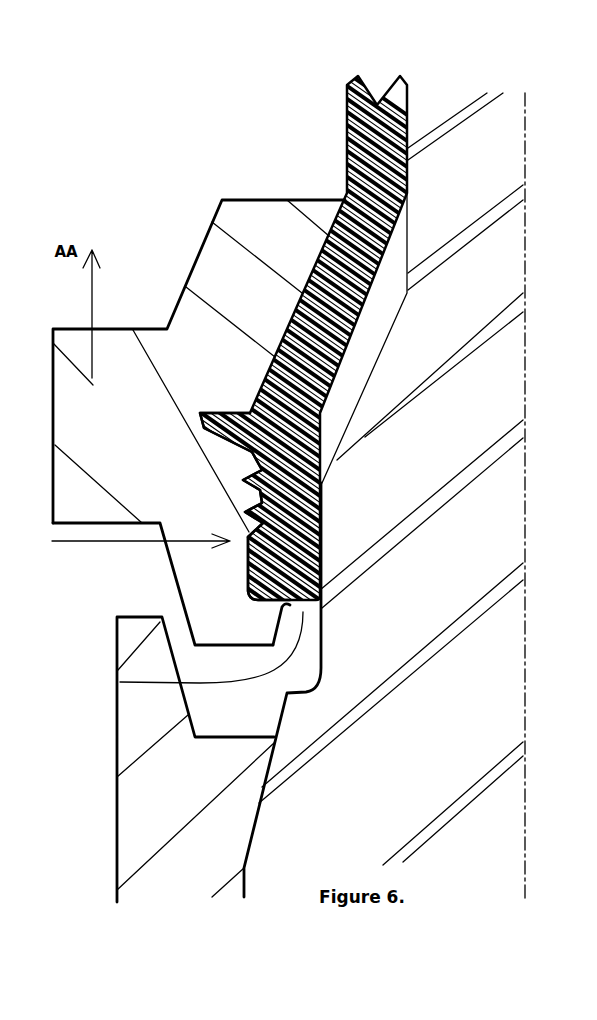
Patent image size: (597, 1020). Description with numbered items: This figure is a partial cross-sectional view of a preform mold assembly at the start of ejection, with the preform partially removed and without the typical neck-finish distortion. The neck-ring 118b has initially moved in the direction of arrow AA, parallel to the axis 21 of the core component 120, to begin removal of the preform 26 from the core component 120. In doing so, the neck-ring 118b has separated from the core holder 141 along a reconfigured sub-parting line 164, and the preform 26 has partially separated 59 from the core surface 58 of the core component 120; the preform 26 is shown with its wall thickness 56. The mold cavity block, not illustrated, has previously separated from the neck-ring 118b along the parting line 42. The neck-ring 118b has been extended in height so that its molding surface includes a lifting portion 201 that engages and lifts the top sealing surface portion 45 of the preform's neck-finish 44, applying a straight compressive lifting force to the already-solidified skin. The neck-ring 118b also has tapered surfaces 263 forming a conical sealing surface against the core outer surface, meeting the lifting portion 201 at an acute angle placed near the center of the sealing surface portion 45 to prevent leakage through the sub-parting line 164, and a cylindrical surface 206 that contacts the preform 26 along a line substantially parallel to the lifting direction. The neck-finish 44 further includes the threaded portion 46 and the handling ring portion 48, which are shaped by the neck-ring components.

The axis 21 is at (523, 121).
The preform 26 is at (325, 372).
The parting line 42 is at (273, 198).
The neck-finish 44 is at (127, 543).
The sealing surface portion 45 is at (316, 606).
The threaded portion 46 is at (247, 477).
The handling ring portion 48 is at (207, 423).
The wall thickness 56 is at (325, 490).
The core surface 58 is at (320, 560).
The partial separation 59 is at (338, 403).
The neck-ring component 118b is at (215, 305).
The core component 120 is at (447, 321).
The core holder 141 is at (140, 855).
The sub-parting line 164 is at (290, 607).
The lifting portion 201 is at (275, 640).
The cylindrical surface 206 is at (248, 570).
The tapered surfaces 263 is at (265, 616).